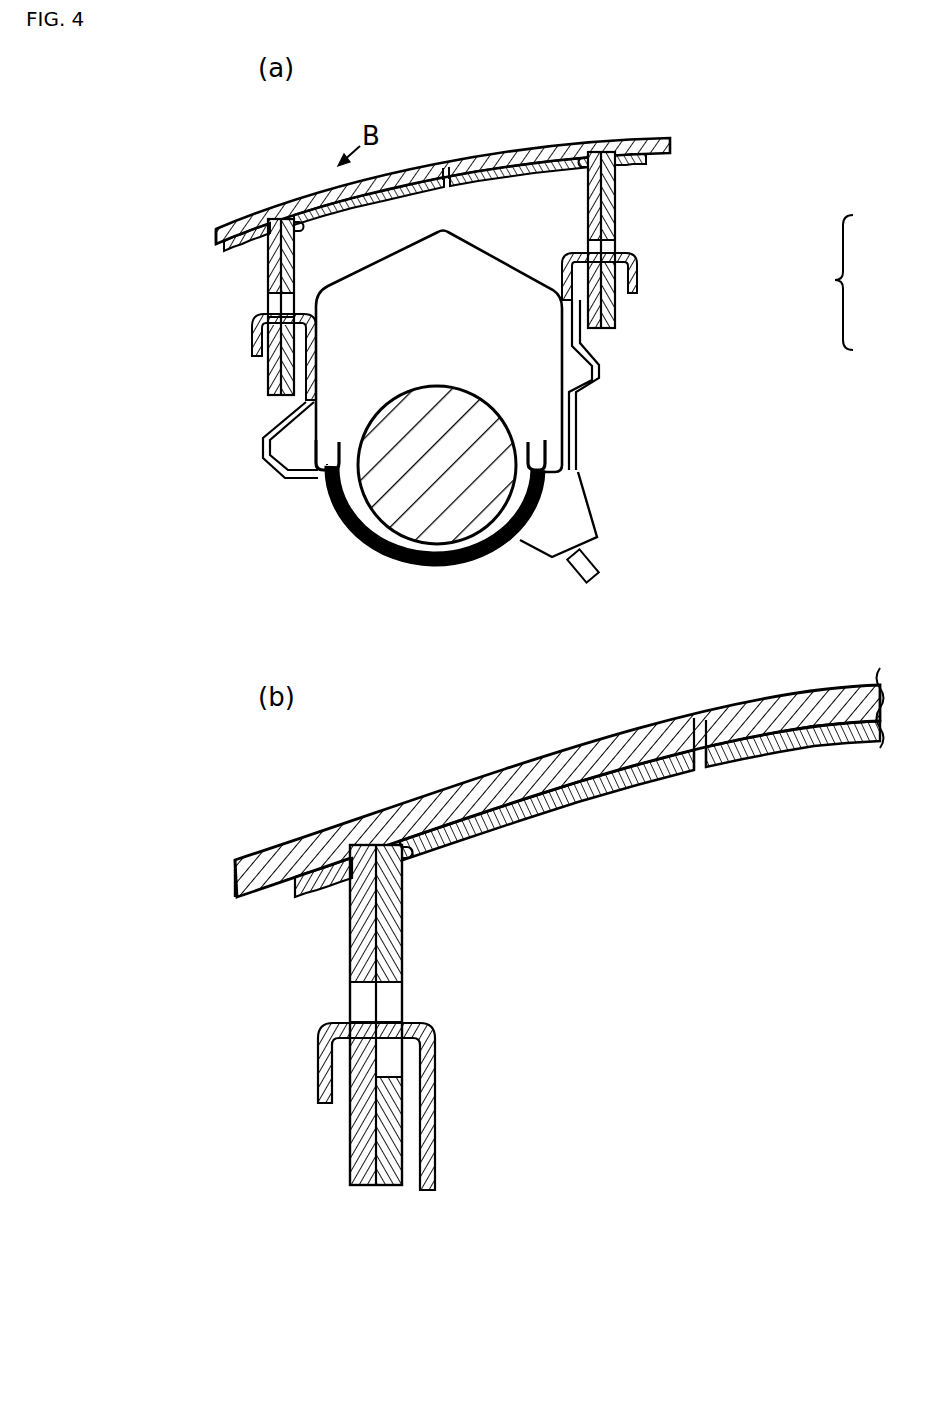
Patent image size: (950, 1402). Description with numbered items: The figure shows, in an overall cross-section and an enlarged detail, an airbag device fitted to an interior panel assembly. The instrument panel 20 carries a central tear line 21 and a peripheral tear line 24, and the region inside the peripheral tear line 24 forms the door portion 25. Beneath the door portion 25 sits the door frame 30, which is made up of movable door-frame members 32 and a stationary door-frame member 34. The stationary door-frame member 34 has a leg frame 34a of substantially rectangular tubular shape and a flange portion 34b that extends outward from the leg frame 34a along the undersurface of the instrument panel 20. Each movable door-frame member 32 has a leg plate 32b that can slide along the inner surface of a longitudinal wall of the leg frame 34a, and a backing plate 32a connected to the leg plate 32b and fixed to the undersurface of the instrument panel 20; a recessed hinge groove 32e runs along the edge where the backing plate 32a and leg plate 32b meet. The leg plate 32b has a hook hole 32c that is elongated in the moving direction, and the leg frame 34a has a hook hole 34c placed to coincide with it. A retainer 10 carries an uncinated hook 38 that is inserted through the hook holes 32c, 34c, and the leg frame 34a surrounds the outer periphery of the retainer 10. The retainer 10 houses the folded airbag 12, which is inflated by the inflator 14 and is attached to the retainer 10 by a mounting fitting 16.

The retainer 10 is at (430, 566).
The airbag 12 is at (372, 262).
The inflator 14 is at (383, 398).
The mounting fitting 16 is at (339, 458).
The instrument panel 20 is at (208, 228).
The central tear line 21 is at (444, 168).
The peripheral tear line 24 is at (282, 208).
The door portion 25 is at (597, 55).
The door frame 30 is at (863, 282).
The movable door-frame member 32 is at (604, 334).
The backing plate 32a is at (381, 172).
The leg plate 32b is at (588, 240).
The hook hole 32c is at (295, 305).
The hinge groove 32e is at (301, 229).
The stationary door-frame member 34 is at (421, 689).
The leg frame 34a is at (268, 305).
The flange portion 34b is at (245, 250).
The hook hole 34c is at (266, 322).
The uncinated hook 38 is at (257, 342).